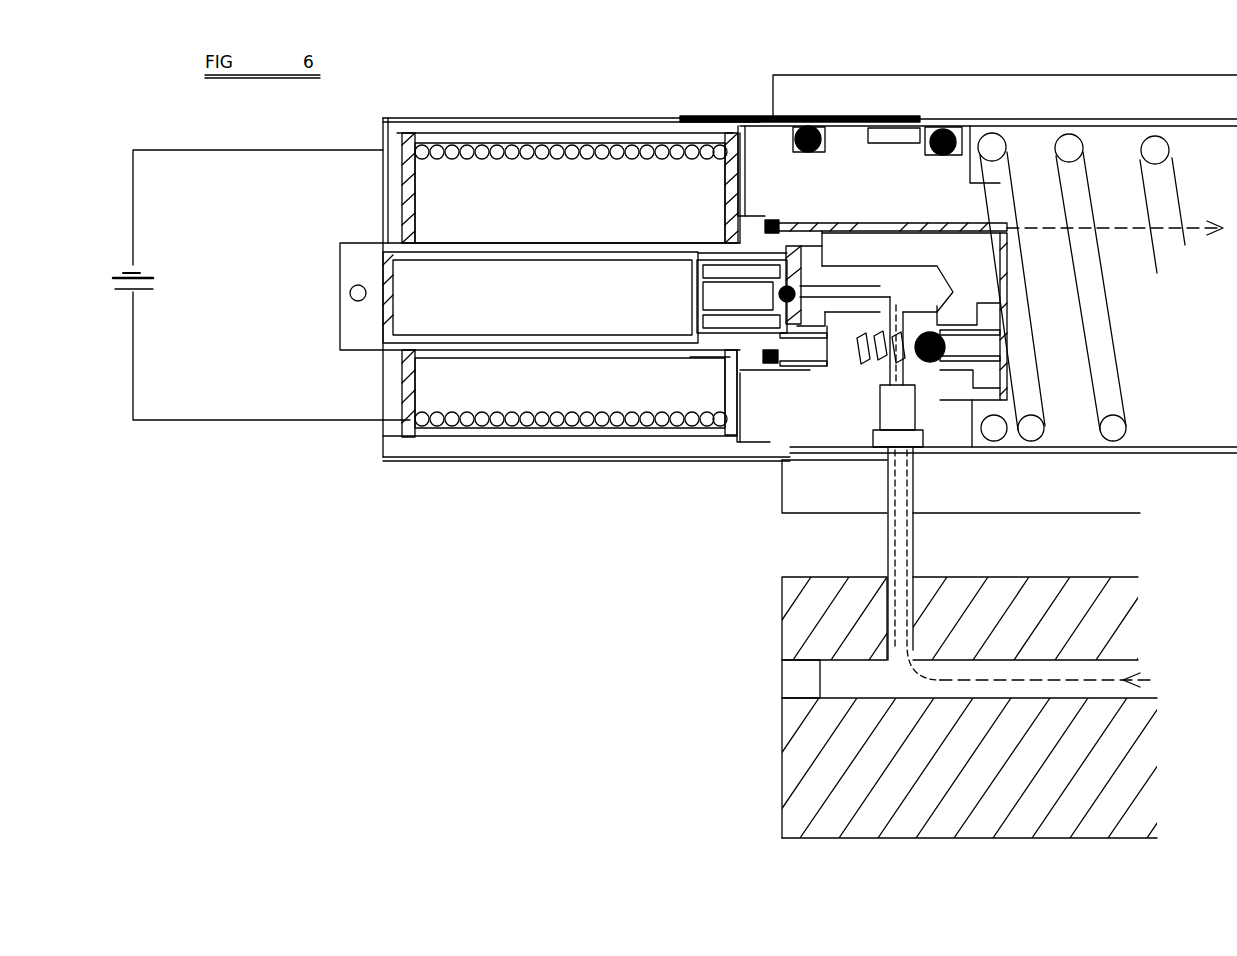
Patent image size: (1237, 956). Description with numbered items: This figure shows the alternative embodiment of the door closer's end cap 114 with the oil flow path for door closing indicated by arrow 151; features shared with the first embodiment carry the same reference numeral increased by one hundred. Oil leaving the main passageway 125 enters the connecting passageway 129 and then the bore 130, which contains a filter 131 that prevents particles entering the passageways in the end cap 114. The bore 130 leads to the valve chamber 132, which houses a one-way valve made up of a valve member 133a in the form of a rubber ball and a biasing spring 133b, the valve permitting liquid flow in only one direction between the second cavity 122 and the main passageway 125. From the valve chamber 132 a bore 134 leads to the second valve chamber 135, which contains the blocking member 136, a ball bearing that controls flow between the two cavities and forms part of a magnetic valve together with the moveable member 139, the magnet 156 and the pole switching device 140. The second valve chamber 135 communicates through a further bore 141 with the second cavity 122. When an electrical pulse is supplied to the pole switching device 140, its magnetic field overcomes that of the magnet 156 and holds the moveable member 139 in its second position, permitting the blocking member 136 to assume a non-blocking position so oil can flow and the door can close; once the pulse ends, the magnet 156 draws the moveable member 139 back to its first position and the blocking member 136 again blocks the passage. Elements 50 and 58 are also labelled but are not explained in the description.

The power source 50 is at (160, 278).
The pole switching device 140 is at (574, 261).
The magnet 156 is at (571, 193).
The moveable member 139 is at (540, 296).
The sensor 58 is at (746, 293).
The blocking member 136 is at (792, 305).
The end cap 114 is at (760, 150).
The further bore 141 is at (877, 231).
The bore 134 is at (880, 288).
The second valve chamber 135 is at (778, 392).
The valve chamber 132 is at (858, 360).
The bore 130 is at (885, 376).
The filter 131 is at (880, 415).
The connecting passageway 129 is at (903, 557).
The second cavity 122 is at (1081, 281).
The arrow 151 is at (1121, 207).
The valve member 133a is at (1003, 343).
The spring 133b is at (912, 360).
The main passageway 125 is at (1057, 690).